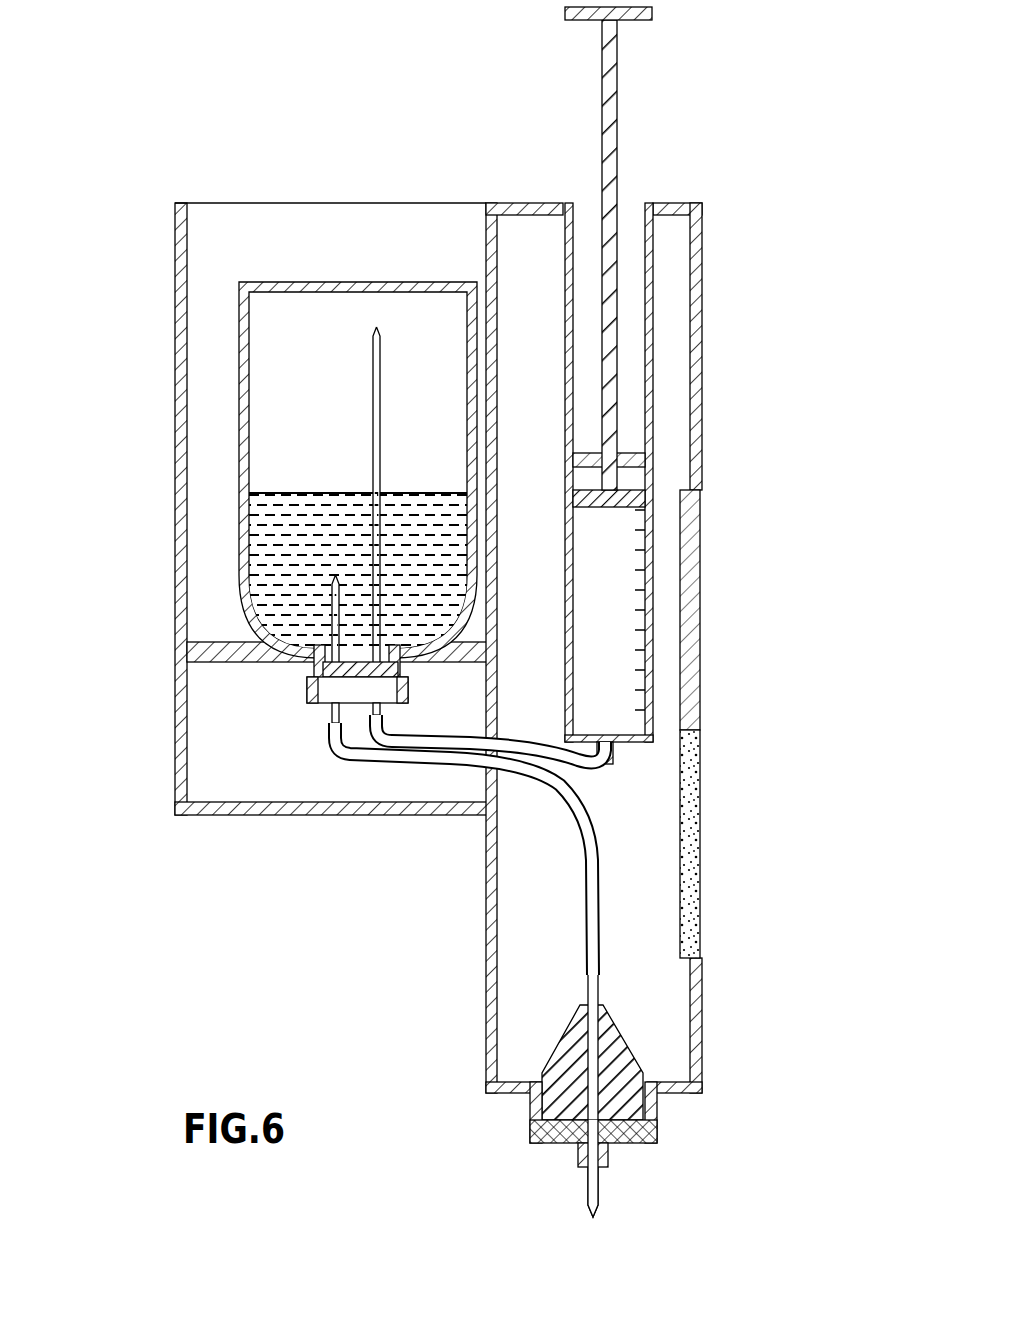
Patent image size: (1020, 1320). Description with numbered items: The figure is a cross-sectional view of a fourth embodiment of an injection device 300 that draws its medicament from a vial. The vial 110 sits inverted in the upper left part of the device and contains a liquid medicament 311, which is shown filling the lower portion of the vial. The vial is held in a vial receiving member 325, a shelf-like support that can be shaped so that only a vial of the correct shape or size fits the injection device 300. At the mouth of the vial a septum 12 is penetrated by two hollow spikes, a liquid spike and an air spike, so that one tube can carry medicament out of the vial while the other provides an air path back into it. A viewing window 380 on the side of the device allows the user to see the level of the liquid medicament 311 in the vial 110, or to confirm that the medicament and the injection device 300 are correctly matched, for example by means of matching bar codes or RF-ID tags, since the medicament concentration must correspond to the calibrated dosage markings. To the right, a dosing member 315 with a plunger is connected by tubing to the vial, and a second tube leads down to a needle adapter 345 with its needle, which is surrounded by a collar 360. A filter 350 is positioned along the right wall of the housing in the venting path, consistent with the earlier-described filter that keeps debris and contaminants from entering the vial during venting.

The injection device 300 is at (157, 165).
The vial 110 is at (276, 288).
The liquid medicament 311 is at (308, 525).
The septum 12 is at (307, 687).
The syringe 315 is at (652, 327).
The vial receiving member 325 is at (185, 644).
The needle hub 345 is at (643, 1122).
The filter 350 is at (735, 747).
The needle collar 360 is at (545, 1140).
The viewing window 380 is at (178, 430).